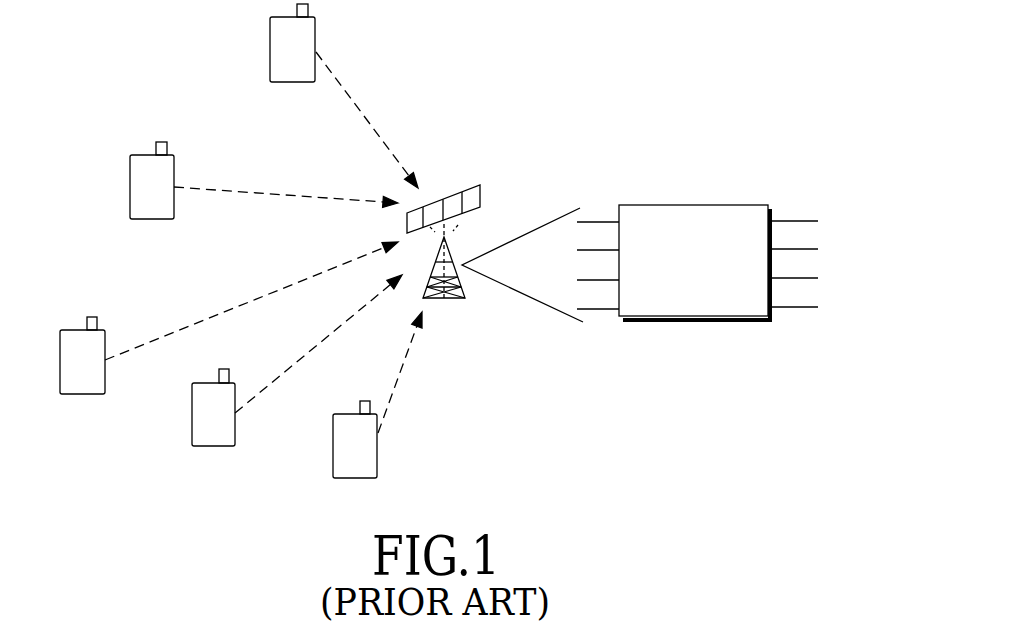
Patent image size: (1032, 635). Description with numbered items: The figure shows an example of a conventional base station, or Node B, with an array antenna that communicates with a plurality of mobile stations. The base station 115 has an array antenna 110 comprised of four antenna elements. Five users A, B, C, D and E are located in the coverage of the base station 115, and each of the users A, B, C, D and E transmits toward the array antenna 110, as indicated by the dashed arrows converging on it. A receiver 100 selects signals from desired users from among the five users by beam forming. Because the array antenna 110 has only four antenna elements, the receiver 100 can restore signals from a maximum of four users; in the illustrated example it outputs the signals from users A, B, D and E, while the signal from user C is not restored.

The receiver 100 is at (690, 205).
The array antenna 110 is at (481, 196).
The base station 115 is at (444, 300).
The user A is at (270, 50).
The user B is at (130, 188).
The user C is at (60, 360).
The user D is at (192, 414).
The user E is at (333, 446).